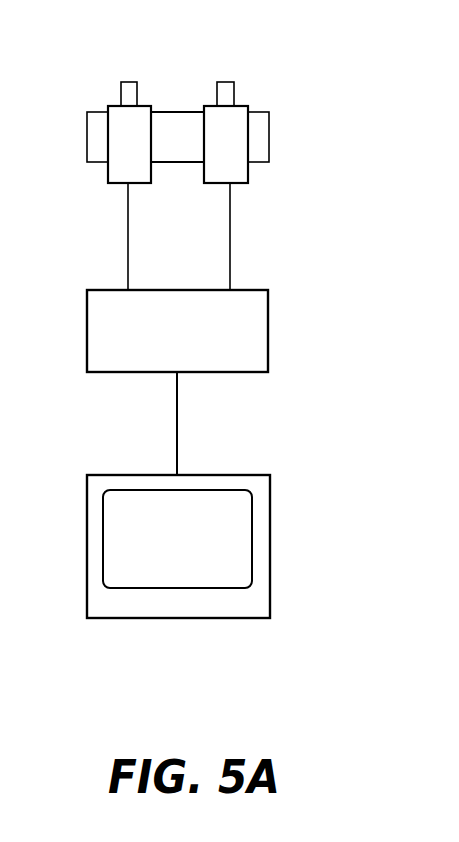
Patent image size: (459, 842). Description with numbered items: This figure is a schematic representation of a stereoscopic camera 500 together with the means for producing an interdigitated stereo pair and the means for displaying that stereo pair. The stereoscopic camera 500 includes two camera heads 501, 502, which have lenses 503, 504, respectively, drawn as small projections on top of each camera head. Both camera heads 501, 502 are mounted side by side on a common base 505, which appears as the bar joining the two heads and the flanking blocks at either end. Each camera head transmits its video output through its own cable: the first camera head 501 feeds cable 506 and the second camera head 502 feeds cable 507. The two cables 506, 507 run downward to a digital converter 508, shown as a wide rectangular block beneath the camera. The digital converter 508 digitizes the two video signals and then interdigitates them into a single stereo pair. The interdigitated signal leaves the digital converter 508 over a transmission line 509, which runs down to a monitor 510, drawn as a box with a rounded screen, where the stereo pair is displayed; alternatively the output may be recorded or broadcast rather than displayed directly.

The stereoscopic camera 500 is at (292, 92).
The camera head 501 is at (107, 175).
The camera head 502 is at (248, 175).
The lens 503 is at (132, 85).
The lens 504 is at (231, 80).
The base 505 is at (269, 139).
The cable 506 is at (128, 233).
The cable 507 is at (230, 245).
The digital converter 508 is at (268, 312).
The transmission line 509 is at (177, 443).
The monitor 510 is at (270, 510).